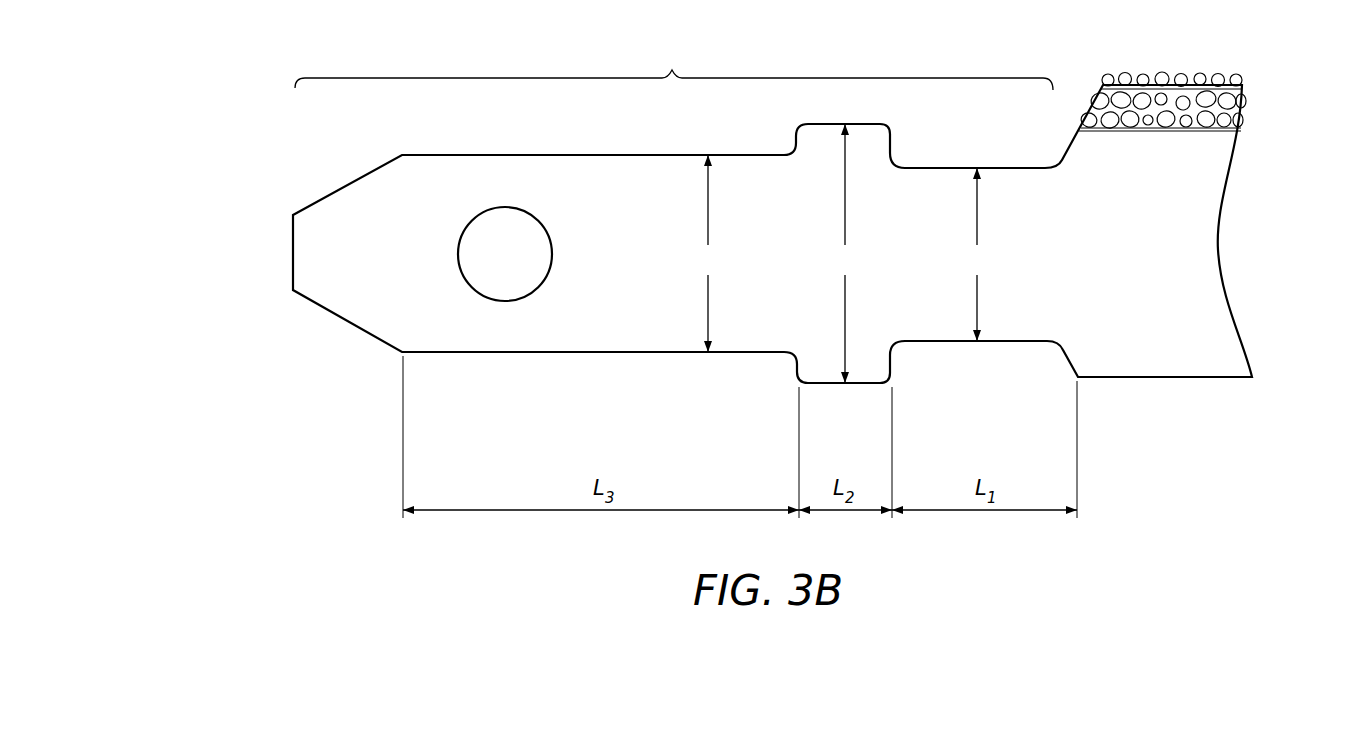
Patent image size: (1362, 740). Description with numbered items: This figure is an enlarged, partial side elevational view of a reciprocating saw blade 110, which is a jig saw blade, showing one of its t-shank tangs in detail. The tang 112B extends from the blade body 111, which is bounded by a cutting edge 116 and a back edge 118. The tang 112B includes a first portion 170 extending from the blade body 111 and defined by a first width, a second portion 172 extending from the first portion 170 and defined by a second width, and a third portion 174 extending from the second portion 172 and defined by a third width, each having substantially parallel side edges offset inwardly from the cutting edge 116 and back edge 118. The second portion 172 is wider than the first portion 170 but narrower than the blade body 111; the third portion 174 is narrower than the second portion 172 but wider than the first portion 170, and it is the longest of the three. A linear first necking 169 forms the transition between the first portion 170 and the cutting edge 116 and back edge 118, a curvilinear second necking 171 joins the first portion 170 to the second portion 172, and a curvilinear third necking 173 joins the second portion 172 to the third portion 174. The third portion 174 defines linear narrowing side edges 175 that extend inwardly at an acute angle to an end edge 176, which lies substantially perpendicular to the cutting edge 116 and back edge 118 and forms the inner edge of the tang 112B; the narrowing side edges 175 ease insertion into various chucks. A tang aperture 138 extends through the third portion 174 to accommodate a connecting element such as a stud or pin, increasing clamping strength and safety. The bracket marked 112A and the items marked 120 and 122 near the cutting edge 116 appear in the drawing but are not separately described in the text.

The reciprocating saw blade 110 is at (621, 142).
The blade body 111 is at (1171, 346).
The shank portion of blade 112A is at (674, 66).
The first tang 112B is at (232, 277).
The cutting edge 116 is at (1137, 60).
The back edge 118 is at (1197, 380).
The abrasive layer 120 is at (1185, 76).
The cutting edge region 122 is at (1277, 95).
The tang aperture 138 is at (545, 245).
The first necking 169 is at (1069, 148).
The first portion 170 is at (975, 368).
The second necking 171 is at (899, 161).
The second portion 172 is at (843, 410).
The third necking 173 is at (793, 148).
The third portion 174 is at (706, 376).
The narrowing side edges 175 is at (346, 184).
The end edge 176 is at (293, 228).